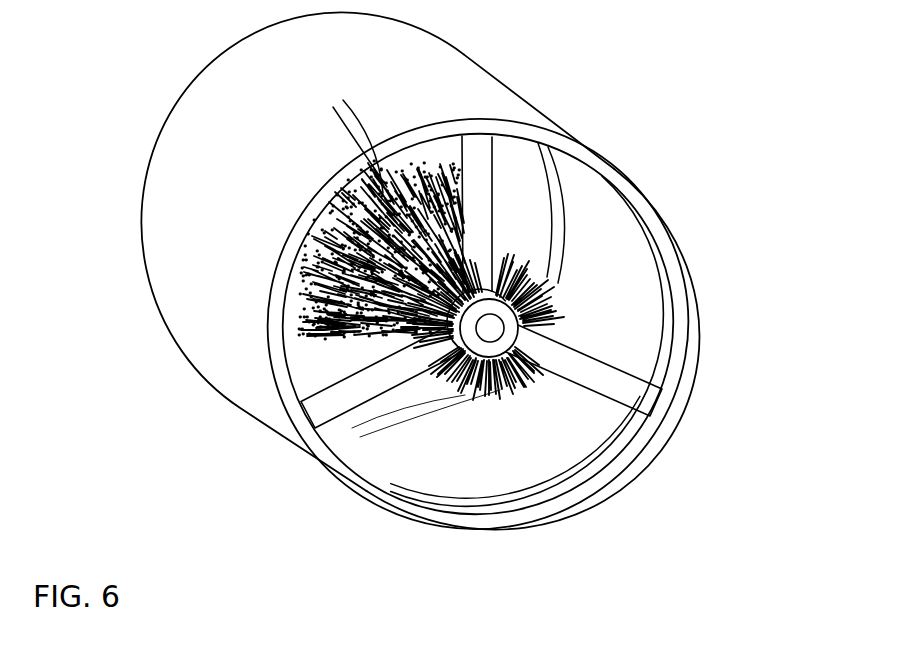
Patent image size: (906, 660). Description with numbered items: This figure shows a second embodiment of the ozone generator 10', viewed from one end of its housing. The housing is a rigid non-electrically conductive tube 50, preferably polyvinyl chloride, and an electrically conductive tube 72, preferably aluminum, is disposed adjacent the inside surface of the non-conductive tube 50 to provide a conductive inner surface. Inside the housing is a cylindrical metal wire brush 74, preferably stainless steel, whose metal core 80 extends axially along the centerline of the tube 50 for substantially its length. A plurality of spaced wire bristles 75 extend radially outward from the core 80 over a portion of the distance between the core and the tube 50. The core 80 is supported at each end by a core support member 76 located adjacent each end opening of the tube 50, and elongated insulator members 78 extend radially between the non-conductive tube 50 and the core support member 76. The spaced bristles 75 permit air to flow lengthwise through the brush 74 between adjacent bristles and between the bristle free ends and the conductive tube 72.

The ozone generator 10' is at (68, 435).
The non-electrically conductive tube 50 is at (478, 93).
The conductive tube 72 is at (608, 250).
The metal wire brush 74 is at (317, 337).
The wire bristles 75 is at (380, 178).
The core support member 76 is at (490, 347).
The elongated insulator members 78 is at (358, 388).
The metal core 80 is at (492, 328).